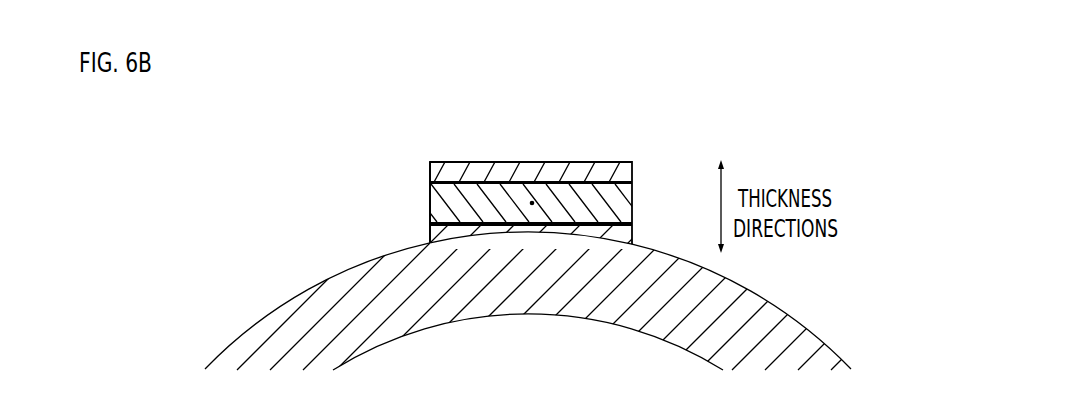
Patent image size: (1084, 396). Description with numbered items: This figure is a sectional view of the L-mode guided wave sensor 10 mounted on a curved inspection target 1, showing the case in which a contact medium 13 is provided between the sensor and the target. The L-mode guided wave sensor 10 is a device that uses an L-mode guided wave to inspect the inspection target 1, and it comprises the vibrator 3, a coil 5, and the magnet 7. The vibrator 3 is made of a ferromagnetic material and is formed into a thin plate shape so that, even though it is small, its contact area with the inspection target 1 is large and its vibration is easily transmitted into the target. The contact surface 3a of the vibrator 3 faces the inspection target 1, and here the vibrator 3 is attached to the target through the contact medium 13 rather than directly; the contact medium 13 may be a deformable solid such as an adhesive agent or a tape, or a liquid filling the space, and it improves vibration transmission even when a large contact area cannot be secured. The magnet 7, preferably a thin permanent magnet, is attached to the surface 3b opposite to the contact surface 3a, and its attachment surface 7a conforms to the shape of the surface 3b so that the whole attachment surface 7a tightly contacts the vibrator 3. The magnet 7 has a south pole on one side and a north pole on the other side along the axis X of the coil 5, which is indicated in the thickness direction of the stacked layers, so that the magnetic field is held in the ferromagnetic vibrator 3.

The inspection target 1 is at (328, 279).
The L-mode guided wave sensor 10 is at (411, 133).
The magnet 7 is at (560, 169).
The attachment surface of the magnet 7a is at (478, 162).
The surface opposite to the contact surface 3b is at (507, 162).
The vibrator 3 is at (632, 192).
The axis of the coil X is at (532, 203).
The contact medium 13 is at (632, 235).
The coil 5 is at (428, 208).
The contact surface of the vibrator 3a is at (463, 228).